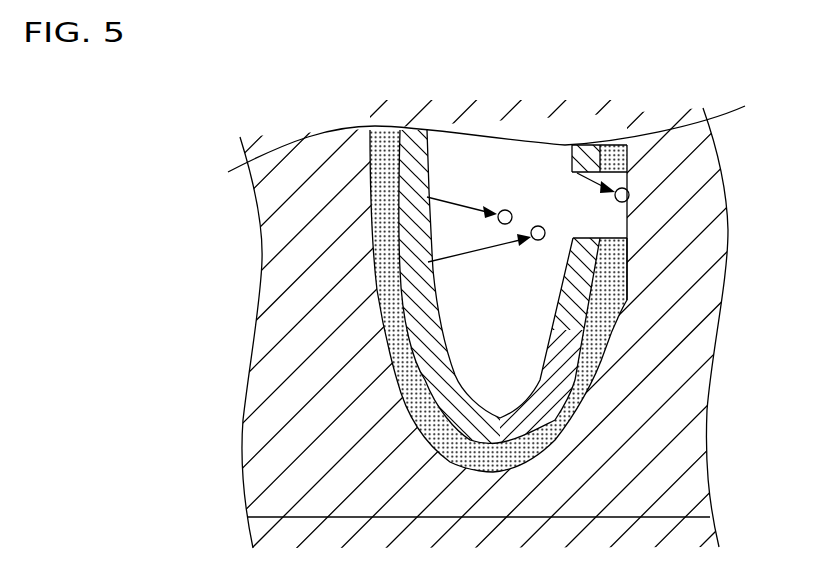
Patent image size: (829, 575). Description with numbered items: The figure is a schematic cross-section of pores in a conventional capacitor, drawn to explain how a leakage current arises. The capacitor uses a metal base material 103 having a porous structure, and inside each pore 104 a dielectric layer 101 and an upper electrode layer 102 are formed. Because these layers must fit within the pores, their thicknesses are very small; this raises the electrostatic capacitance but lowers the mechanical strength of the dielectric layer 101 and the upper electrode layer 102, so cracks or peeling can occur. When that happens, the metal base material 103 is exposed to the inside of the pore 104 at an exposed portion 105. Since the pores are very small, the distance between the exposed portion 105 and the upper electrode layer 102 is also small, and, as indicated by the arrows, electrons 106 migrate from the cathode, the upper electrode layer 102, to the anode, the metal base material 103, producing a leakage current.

The dielectric layer 101 is at (607, 307).
The upper electrode layer 102 is at (414, 311).
The metal base material 103 is at (650, 390).
The pore 104 is at (467, 352).
The exposed portion 105 is at (628, 220).
The electrons 106 is at (504, 210).